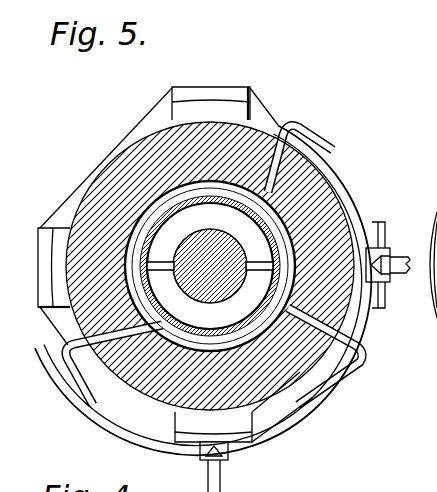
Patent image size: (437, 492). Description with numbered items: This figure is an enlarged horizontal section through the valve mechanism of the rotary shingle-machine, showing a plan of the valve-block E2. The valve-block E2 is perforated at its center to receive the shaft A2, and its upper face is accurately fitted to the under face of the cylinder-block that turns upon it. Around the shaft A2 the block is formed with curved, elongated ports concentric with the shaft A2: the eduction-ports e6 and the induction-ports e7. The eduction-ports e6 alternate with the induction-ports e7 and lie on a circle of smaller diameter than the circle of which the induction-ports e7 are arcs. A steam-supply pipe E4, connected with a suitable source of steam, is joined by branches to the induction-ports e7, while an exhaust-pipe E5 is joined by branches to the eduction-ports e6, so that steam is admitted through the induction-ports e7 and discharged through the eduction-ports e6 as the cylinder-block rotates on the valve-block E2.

The valve-block E2 is at (364, 339).
The steam-supply pipe E4 is at (347, 182).
The exhaust-pipe E5 is at (252, 446).
The induction-ports e7 is at (205, 170).
The eduction-ports e6 is at (315, 260).
The shaft A2 is at (211, 229).